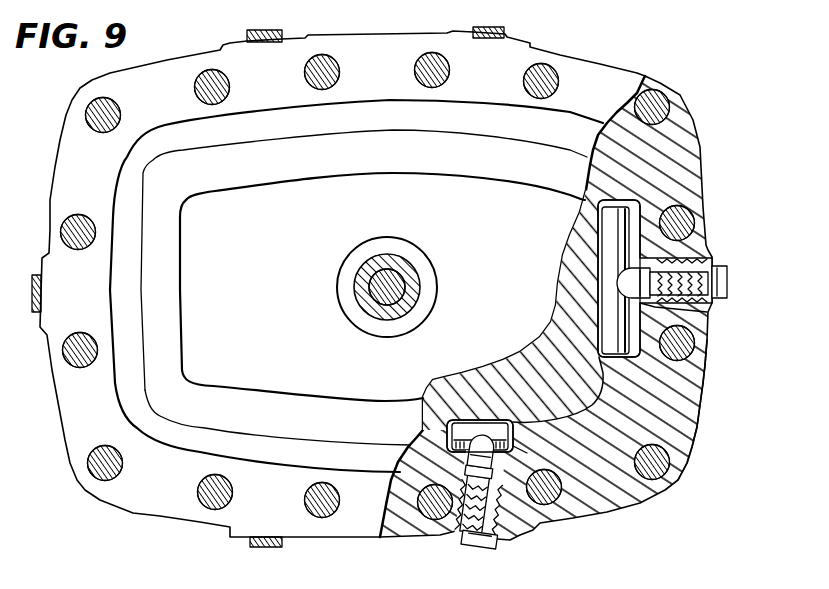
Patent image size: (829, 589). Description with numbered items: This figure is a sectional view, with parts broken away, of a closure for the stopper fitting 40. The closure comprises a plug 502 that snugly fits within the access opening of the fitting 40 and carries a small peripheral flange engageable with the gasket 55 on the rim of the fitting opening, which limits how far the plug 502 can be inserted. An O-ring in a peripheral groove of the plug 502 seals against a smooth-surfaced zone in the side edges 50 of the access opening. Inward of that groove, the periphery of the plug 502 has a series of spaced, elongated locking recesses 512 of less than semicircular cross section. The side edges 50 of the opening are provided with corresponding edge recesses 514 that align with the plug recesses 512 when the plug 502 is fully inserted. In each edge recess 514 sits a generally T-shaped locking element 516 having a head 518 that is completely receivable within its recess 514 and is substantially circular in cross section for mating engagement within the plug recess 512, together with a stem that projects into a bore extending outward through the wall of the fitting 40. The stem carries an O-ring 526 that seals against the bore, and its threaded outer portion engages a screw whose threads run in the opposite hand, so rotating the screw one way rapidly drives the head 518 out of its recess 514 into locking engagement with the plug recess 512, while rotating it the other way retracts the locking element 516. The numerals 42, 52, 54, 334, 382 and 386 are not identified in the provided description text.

The stopper fitting 40 is at (693, 455).
The outer wall 42 is at (698, 418).
The side edges of the access opening 50 is at (595, 172).
The housing 52 is at (160, 497).
The bolt holes 54 is at (558, 80).
The gasket 55 is at (257, 452).
The bearing ring 334 is at (413, 270).
The hub bore 382 is at (428, 320).
The shaft 386 is at (407, 292).
The plug 502 is at (343, 430).
The locking grooves or recesses 512 is at (527, 400).
The edge recesses 514 is at (620, 358).
The locking element 516 is at (636, 259).
The head of locking element 518 is at (613, 247).
The O-ring 526 is at (683, 318).